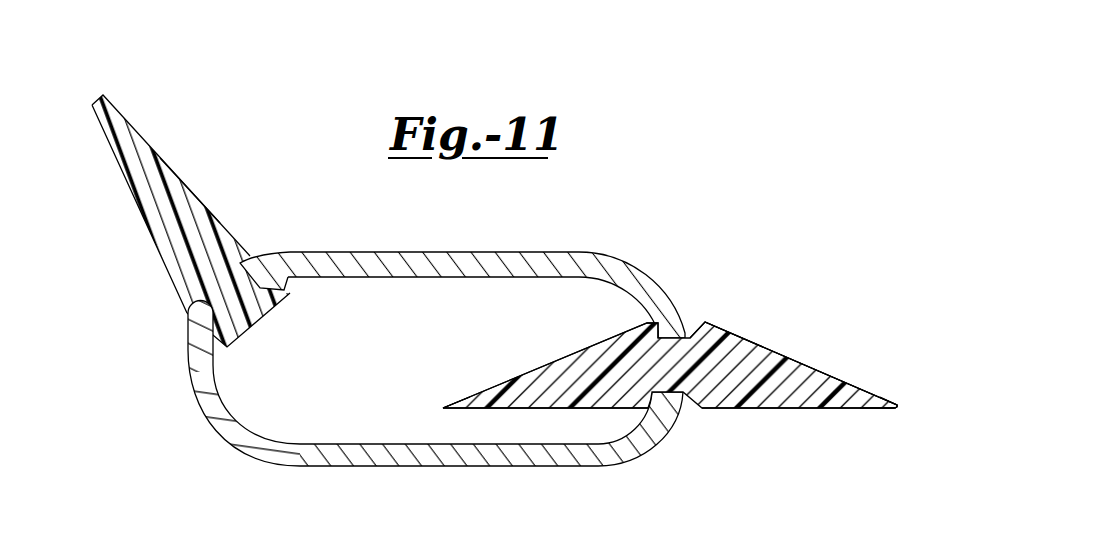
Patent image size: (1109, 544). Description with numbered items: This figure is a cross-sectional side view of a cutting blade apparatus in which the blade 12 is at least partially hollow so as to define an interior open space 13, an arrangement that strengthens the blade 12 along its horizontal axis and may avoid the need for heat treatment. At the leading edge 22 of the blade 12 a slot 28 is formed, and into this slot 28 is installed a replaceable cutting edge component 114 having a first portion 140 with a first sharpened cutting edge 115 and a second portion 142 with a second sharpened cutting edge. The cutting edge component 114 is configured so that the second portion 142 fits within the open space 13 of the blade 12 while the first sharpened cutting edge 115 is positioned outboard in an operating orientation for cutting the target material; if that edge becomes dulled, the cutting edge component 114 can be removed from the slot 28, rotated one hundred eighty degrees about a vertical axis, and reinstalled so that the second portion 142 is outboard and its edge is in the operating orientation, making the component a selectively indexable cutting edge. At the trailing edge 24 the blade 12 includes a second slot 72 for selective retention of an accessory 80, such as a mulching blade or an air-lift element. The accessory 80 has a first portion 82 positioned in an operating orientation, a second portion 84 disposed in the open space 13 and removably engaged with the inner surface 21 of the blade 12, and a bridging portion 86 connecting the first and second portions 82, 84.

The blade 12 is at (602, 250).
The interior space 13 is at (414, 348).
The inner surface 21 is at (320, 278).
The leading edge 22 is at (652, 455).
The trailing edge 24 is at (188, 378).
The slot 28 is at (690, 320).
The second slot 72 is at (262, 250).
The accessory 80 is at (183, 162).
The first portion 82 is at (219, 223).
The second portion 84 is at (220, 342).
The bridging portion 86 is at (200, 299).
The cutting edge component 114 is at (815, 322).
The first sharpened cutting edge 115 is at (900, 408).
The first portion 140 is at (759, 338).
The second portion 142 is at (509, 375).